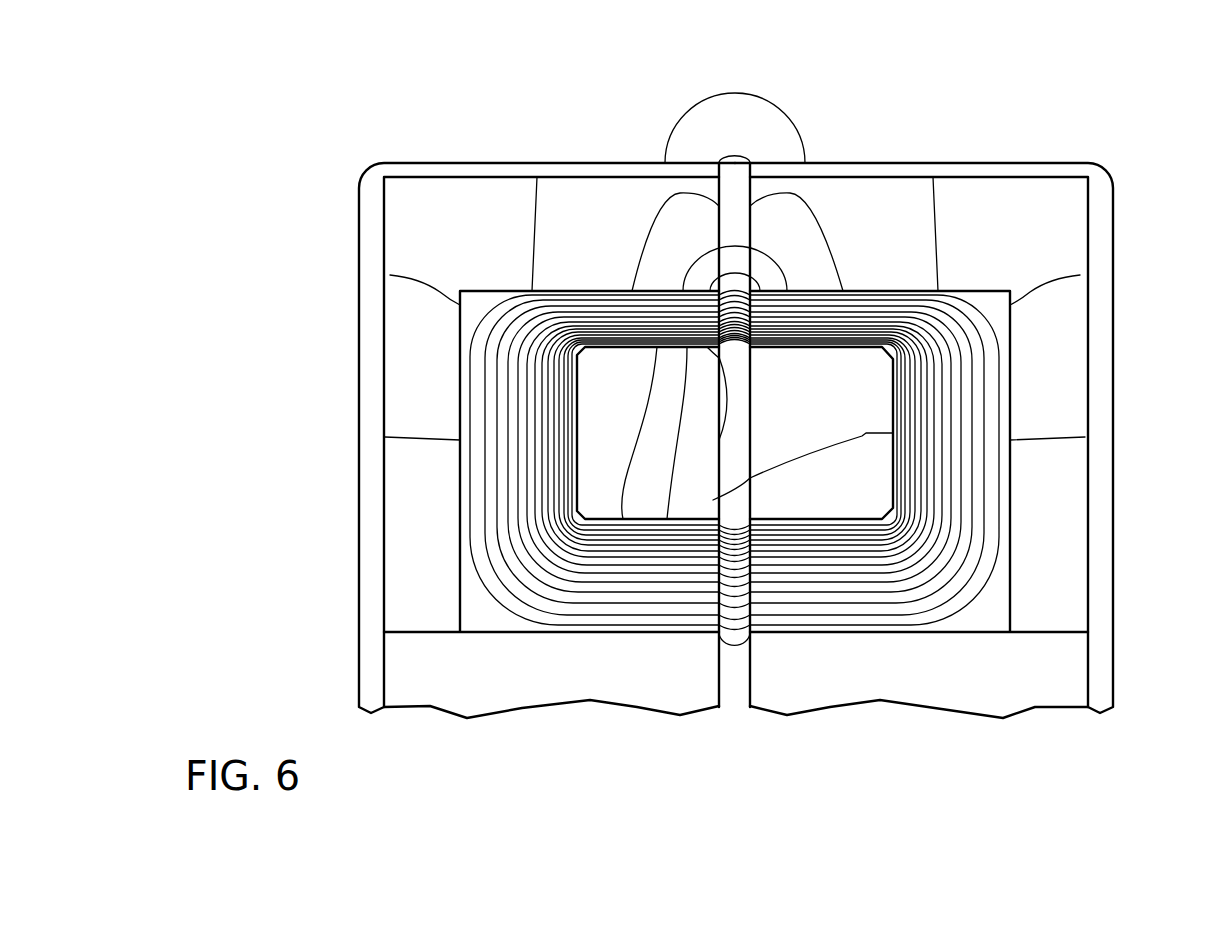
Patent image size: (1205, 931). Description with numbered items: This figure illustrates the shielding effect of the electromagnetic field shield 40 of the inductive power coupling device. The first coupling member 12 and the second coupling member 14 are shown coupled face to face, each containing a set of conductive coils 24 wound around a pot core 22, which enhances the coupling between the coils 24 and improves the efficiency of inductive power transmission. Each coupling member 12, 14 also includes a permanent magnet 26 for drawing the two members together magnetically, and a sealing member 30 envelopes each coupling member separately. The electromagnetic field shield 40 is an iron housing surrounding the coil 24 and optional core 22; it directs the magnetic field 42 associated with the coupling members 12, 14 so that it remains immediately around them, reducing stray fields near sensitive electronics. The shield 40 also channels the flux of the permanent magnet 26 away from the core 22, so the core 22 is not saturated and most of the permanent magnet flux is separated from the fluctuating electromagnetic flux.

The first coupling member 12 is at (358, 350).
The second coupling member 14 is at (1115, 350).
The pot core 22 is at (496, 506).
The conductive coils 24 is at (617, 493).
The permanent magnet 26 is at (527, 688).
The sealing member 30 is at (737, 688).
The electromagnetic field shield 40 is at (415, 162).
The magnetic field 42 is at (790, 105).